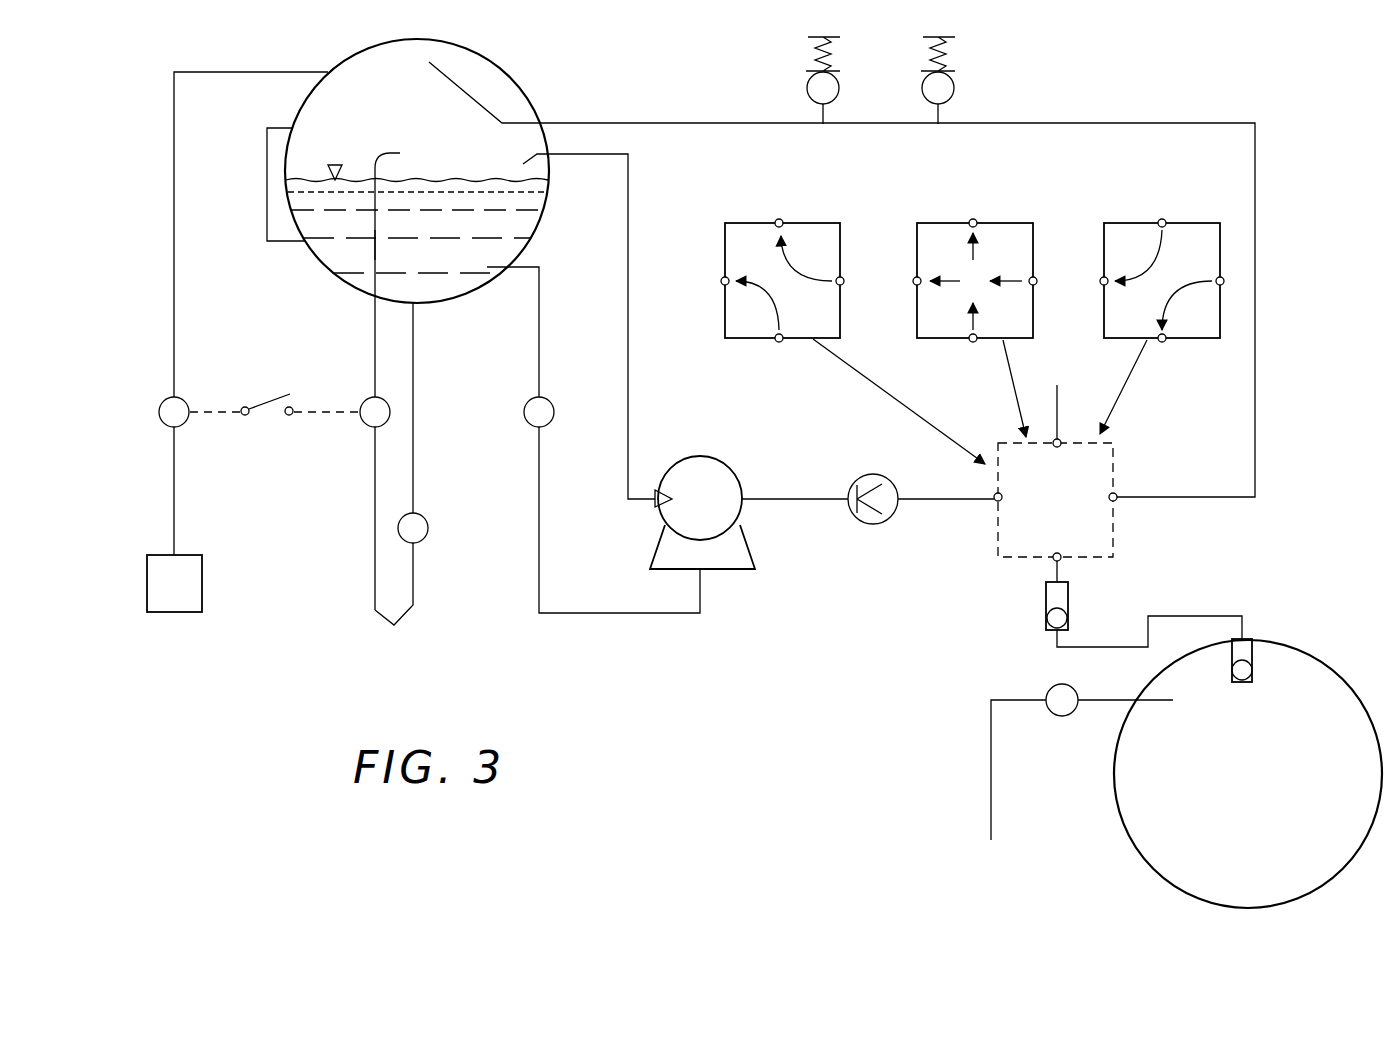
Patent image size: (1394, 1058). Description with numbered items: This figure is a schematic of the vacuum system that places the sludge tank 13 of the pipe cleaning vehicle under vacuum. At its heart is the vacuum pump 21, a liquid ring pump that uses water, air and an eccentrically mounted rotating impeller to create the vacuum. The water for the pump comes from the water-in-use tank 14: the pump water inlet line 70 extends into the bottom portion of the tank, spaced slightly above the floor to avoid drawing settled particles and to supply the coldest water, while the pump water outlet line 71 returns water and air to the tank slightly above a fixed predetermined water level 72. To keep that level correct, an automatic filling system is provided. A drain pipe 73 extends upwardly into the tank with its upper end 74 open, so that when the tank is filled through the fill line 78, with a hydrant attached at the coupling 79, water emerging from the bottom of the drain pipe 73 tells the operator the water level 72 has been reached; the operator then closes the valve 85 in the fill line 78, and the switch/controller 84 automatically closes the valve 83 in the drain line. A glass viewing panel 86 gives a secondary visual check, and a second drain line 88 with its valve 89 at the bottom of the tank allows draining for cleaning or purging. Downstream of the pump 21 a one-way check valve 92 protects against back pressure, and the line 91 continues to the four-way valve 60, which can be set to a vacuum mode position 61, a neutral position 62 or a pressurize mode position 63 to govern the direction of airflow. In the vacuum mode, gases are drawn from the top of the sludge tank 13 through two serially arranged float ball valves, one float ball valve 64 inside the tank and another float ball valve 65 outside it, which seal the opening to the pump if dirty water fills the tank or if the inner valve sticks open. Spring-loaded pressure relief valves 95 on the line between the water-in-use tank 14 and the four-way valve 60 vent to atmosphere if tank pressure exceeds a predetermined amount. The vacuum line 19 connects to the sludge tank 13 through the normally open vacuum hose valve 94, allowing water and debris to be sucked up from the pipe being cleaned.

The sludge tank 13 is at (1366, 688).
The water-in-use tank 14 is at (502, 38).
The vacuum line 19 is at (990, 768).
The vacuum pump 21 is at (749, 512).
The four-way valve 60 is at (1114, 452).
The vacuum mode position 61 is at (813, 223).
The neutral position 62 is at (1001, 223).
The pressurize mode position 63 is at (1183, 223).
The float ball valve 64 is at (1253, 653).
The float ball valve 65 is at (1069, 604).
The pump water inlet line 70 is at (494, 266).
The pump water outlet line 71 is at (526, 154).
The water level 72 is at (336, 164).
The drain pipe 73 is at (375, 252).
The upper end 74 is at (404, 375).
The fill line 78 is at (246, 72).
The coupling 79 is at (174, 583).
The valve 83 is at (370, 428).
The switch/controller 84 is at (266, 398).
The valve 85 is at (192, 405).
The glass viewing panel 86 is at (266, 244).
The second drain line 88 is at (414, 600).
The valve 89 is at (428, 530).
The supply line 91 is at (954, 498).
The one-way check valve 92 is at (872, 474).
The vacuum hose valve 94 is at (1068, 716).
The spring-loaded pressure relief valves 95 is at (922, 80).